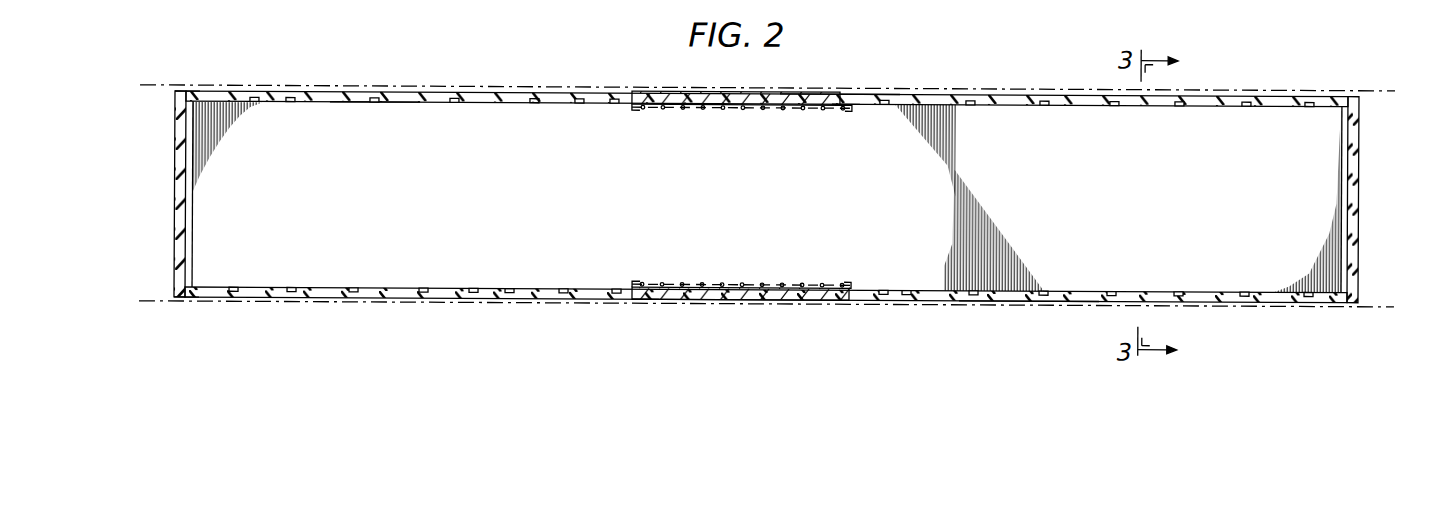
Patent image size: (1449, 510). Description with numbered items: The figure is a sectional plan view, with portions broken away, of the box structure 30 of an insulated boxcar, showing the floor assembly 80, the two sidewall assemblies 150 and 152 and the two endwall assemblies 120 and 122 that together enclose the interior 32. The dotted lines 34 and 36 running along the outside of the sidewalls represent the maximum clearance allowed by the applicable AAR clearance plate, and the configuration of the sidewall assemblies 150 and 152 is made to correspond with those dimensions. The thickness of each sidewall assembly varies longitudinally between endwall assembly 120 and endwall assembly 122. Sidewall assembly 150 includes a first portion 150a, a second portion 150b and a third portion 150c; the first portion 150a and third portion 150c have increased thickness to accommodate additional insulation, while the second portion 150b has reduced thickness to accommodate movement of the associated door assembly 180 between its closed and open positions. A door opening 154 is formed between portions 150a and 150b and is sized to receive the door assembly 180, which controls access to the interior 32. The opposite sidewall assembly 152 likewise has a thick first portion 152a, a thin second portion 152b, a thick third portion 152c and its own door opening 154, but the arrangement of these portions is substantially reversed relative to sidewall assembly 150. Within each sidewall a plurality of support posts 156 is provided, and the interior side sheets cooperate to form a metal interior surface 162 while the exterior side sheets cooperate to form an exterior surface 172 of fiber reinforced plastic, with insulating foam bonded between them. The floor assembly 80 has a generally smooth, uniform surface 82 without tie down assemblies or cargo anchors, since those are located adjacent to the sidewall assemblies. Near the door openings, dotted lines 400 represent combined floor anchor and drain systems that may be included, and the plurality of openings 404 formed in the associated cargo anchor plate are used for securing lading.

The box structure 30 is at (494, 56).
The interior 32 is at (733, 212).
The dotted line 34 is at (836, 90).
The dotted line 36 is at (1027, 303).
The floor assembly 80 is at (210, 233).
The smooth uniform surface 82 is at (372, 124).
The endwall assembly 120 is at (177, 160).
The endwall assembly 122 is at (1366, 170).
The sidewall assembly 150 is at (462, 304).
The first portion 150a is at (307, 298).
The second portion 150b is at (938, 298).
The third portion 150c is at (1288, 300).
The sidewall assembly 152 is at (1040, 84).
The first portion 152a is at (1280, 98).
The second portion 152b is at (577, 98).
The third portion 152c is at (308, 98).
The door opening 154 is at (842, 112).
The support posts 156 is at (290, 103).
The interior surface 162 is at (540, 102).
The exterior surface 172 is at (205, 91).
The door assembly 180 is at (653, 90).
The heat sink block 400 is at (710, 112).
The openings 404 is at (642, 112).